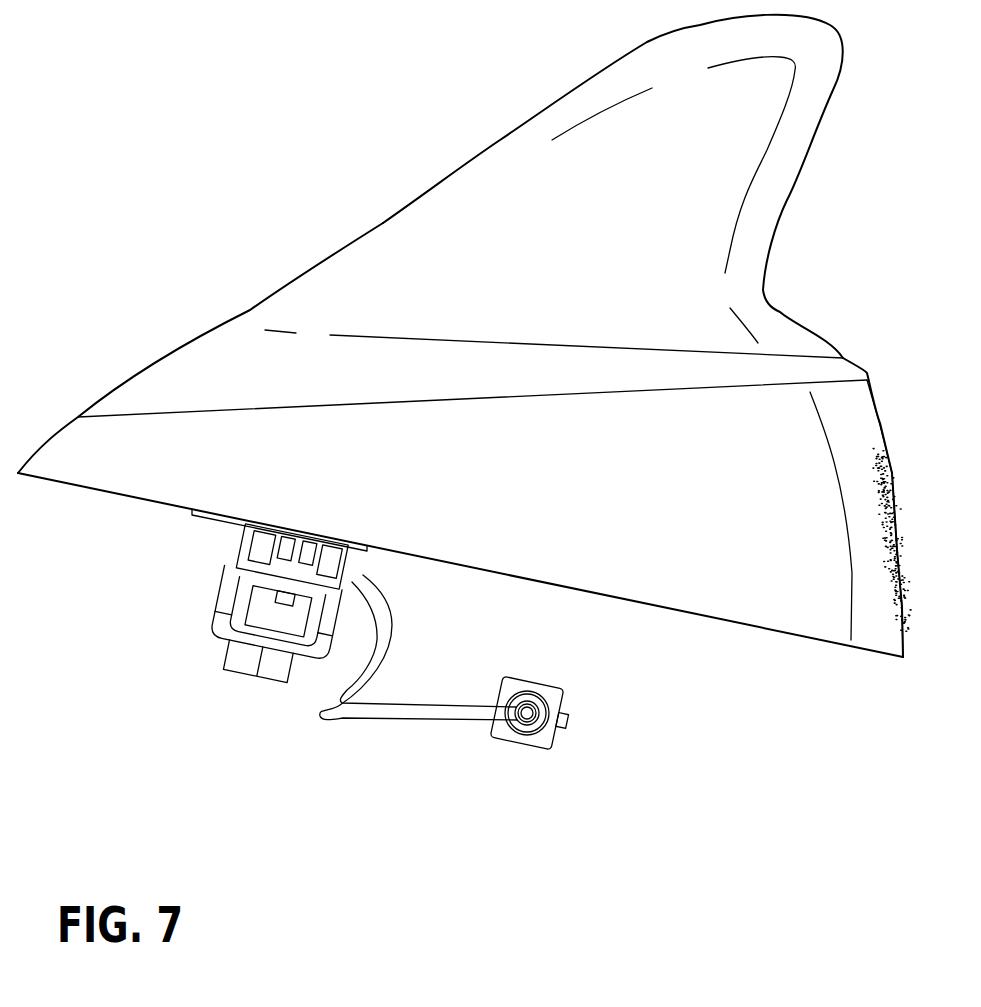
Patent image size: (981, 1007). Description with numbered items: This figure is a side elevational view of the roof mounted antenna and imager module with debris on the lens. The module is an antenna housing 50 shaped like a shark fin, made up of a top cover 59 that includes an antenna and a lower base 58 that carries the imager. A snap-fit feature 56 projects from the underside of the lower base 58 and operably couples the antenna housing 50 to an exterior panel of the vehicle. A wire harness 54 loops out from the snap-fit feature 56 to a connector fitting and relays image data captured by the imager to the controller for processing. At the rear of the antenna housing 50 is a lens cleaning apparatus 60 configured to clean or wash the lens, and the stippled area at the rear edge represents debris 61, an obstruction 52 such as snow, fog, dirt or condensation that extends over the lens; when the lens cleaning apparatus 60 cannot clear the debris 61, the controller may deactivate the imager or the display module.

The antenna housing 50 is at (455, 250).
The obstruction 52 is at (910, 608).
The wire harness 54 is at (387, 625).
The snap-fit feature 56 is at (243, 553).
The lower base 58 is at (780, 595).
The top cover 59 is at (183, 375).
The lens cleaning apparatus 60 is at (893, 440).
The debris 61 is at (897, 547).